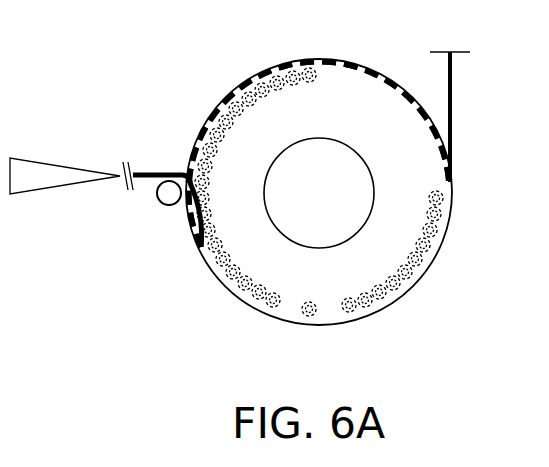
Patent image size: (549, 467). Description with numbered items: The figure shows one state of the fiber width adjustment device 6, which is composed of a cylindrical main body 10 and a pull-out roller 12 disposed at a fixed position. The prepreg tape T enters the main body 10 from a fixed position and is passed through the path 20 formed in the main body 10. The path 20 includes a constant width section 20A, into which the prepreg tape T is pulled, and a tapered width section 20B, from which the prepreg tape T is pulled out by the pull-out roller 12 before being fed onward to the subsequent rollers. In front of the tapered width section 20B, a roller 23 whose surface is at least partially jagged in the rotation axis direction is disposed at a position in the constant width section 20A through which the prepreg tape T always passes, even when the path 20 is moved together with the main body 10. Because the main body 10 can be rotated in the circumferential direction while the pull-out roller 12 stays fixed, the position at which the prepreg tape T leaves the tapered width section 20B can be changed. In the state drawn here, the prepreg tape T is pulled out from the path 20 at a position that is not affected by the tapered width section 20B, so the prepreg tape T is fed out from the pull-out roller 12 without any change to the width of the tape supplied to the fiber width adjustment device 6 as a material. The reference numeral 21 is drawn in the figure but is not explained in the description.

The fiber width adjustment device 6 is at (158, 101).
The main body 10 is at (252, 77).
The pull-out roller 12 is at (156, 196).
The path 20 is at (207, 259).
The constant width section 20A is at (228, 326).
The tapered width section 20B is at (176, 250).
The deposited particles 21 is at (187, 163).
The roller 23 is at (310, 323).
The prepreg tape T is at (453, 95).